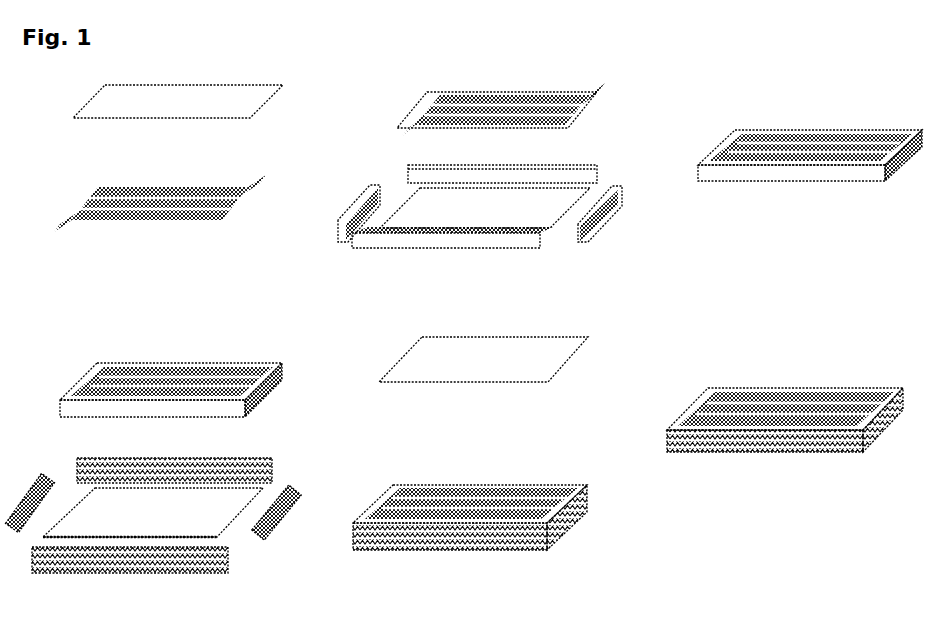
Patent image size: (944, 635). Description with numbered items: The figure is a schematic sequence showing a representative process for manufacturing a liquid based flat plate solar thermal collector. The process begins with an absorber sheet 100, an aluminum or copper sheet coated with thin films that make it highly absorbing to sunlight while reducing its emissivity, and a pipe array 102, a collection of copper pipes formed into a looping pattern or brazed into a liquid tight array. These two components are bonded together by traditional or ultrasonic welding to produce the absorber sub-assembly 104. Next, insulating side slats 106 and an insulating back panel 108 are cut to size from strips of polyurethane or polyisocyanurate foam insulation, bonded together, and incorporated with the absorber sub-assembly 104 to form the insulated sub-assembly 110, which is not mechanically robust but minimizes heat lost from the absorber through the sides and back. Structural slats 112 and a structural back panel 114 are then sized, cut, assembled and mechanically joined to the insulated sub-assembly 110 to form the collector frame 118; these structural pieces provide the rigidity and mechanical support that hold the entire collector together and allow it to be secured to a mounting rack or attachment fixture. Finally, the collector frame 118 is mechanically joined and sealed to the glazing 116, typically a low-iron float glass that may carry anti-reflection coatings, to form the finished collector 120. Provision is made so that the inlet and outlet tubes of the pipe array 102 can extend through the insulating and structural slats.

The absorber sheet 100 is at (217, 82).
The pipe array 102 is at (137, 222).
The absorber sub-assembly 104 is at (492, 90).
The insulating side slats 106 is at (398, 175).
The insulating back panel 108 is at (553, 233).
The insulated sub-assembly 110 is at (808, 125).
The structural slats 112 is at (72, 462).
The structural back panel 114 is at (228, 523).
The glazing 116 is at (500, 390).
The collector frame 118 is at (443, 481).
The finished collector 120 is at (781, 386).